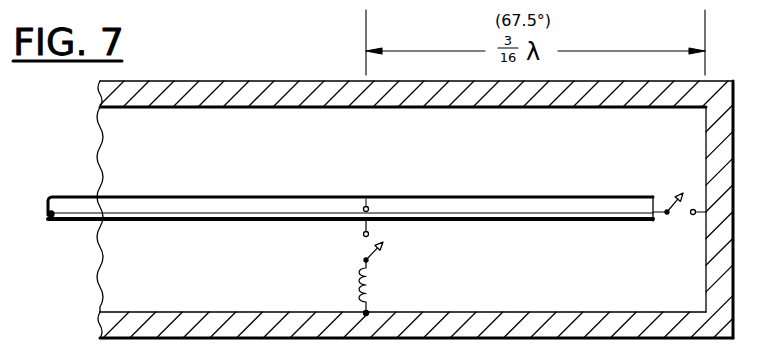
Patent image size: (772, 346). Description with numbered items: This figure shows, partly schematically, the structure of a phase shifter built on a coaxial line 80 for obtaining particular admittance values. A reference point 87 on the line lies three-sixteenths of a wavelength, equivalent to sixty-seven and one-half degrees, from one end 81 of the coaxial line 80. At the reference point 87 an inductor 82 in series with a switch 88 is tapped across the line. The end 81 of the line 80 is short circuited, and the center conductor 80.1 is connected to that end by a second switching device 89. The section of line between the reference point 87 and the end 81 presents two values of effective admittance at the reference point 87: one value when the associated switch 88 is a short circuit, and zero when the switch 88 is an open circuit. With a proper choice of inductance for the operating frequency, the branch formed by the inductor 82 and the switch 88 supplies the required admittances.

The coaxial line 80 is at (286, 76).
The center conductor 80.1 is at (220, 219).
The end of the coaxial line 81 is at (722, 135).
The inductor 82 is at (370, 288).
The reference point 87 is at (369, 207).
The switch 88 is at (363, 252).
The second switching device 89 is at (680, 218).